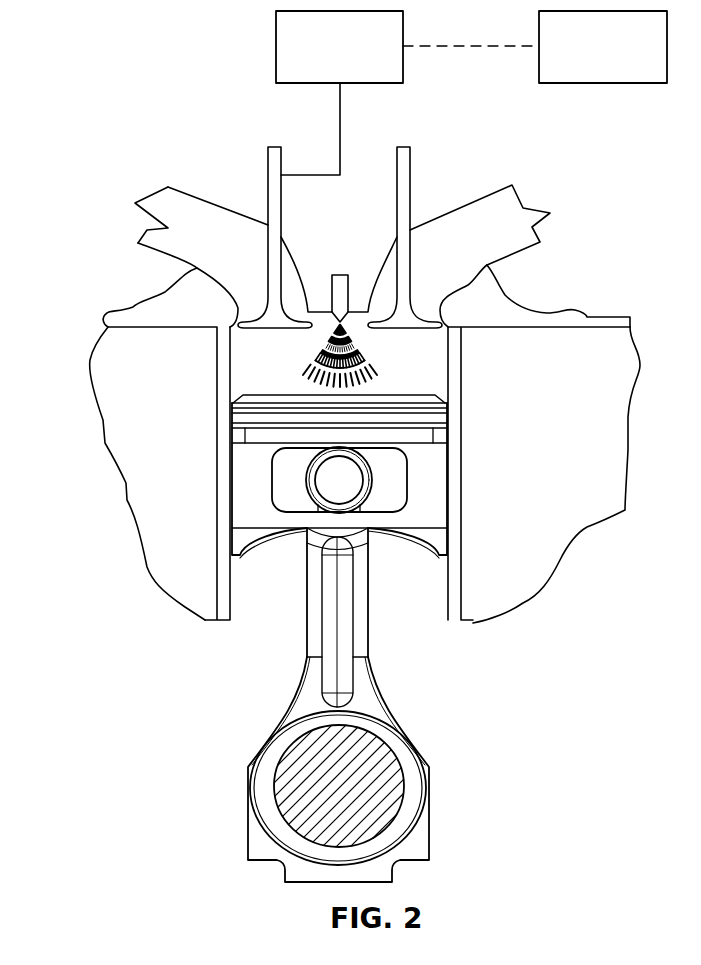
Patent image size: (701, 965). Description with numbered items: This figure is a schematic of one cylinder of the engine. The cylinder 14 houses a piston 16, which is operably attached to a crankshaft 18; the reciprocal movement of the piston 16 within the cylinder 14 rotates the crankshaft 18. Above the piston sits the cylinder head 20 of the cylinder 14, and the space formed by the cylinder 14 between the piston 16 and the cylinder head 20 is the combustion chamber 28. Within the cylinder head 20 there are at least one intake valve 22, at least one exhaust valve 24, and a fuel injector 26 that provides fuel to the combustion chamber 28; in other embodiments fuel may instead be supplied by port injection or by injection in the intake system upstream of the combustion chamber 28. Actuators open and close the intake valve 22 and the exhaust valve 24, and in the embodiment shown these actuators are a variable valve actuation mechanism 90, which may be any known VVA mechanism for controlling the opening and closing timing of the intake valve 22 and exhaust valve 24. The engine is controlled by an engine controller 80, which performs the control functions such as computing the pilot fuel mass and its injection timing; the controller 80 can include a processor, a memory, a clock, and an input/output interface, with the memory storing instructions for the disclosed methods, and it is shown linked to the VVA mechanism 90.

The cylinder 14 is at (125, 378).
The piston 16 is at (418, 482).
The crankshaft 18 is at (387, 767).
The cylinder head 20 is at (587, 320).
The intake valve 22 is at (268, 166).
The exhaust valve 24 is at (410, 152).
The fuel injector 26 is at (335, 272).
The combustion chamber 28 is at (420, 360).
The engine controller 80 is at (587, 62).
The variable valve actuation mechanism 90 is at (324, 62).